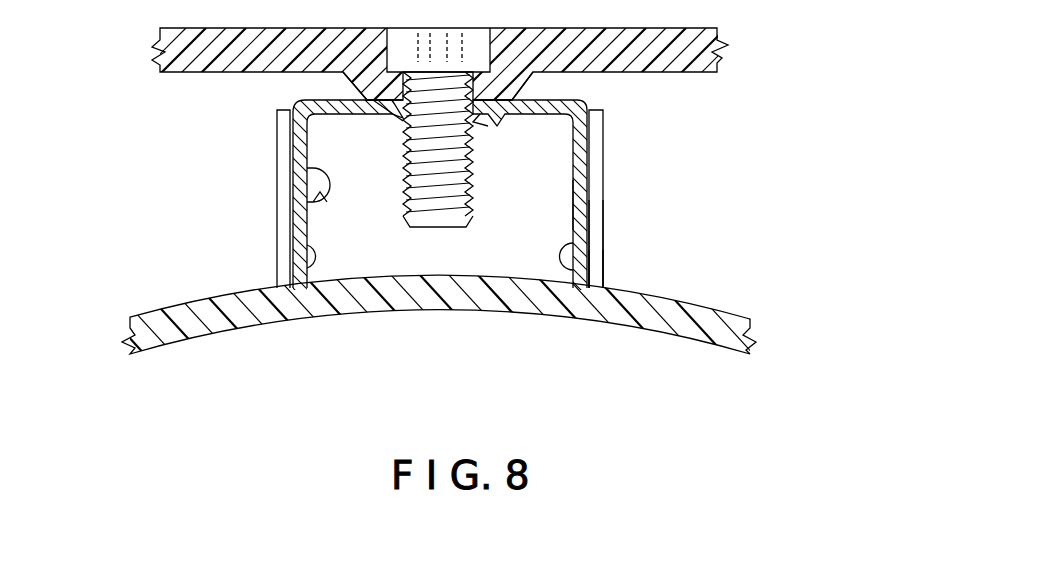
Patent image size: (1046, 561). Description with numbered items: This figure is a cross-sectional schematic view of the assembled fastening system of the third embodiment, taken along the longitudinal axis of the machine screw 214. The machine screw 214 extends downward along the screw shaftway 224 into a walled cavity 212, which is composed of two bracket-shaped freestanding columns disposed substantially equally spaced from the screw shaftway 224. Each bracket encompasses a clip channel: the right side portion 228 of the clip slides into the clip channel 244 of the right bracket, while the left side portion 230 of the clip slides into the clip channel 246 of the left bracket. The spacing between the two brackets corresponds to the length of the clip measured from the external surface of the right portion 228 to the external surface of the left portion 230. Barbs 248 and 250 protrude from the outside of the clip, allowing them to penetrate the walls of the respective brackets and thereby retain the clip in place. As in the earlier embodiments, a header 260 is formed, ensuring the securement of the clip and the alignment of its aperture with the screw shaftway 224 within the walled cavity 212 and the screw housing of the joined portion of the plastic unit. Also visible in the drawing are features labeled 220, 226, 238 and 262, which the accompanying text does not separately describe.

The walled cavity 212 is at (628, 233).
The machine screw 214 is at (486, 174).
The top plate 220 is at (697, 73).
The screw shaftway 224 is at (440, 248).
The boss 226 is at (367, 99).
The right portion 228 is at (589, 186).
The left portion 230 is at (300, 230).
The threaded shaft 238 is at (405, 152).
The clip channel 244 is at (590, 273).
The clip channel 246 is at (305, 268).
The barb 248 is at (560, 195).
The barb 250 is at (300, 180).
The header 260 is at (277, 110).
The locking tooth 262 is at (530, 113).